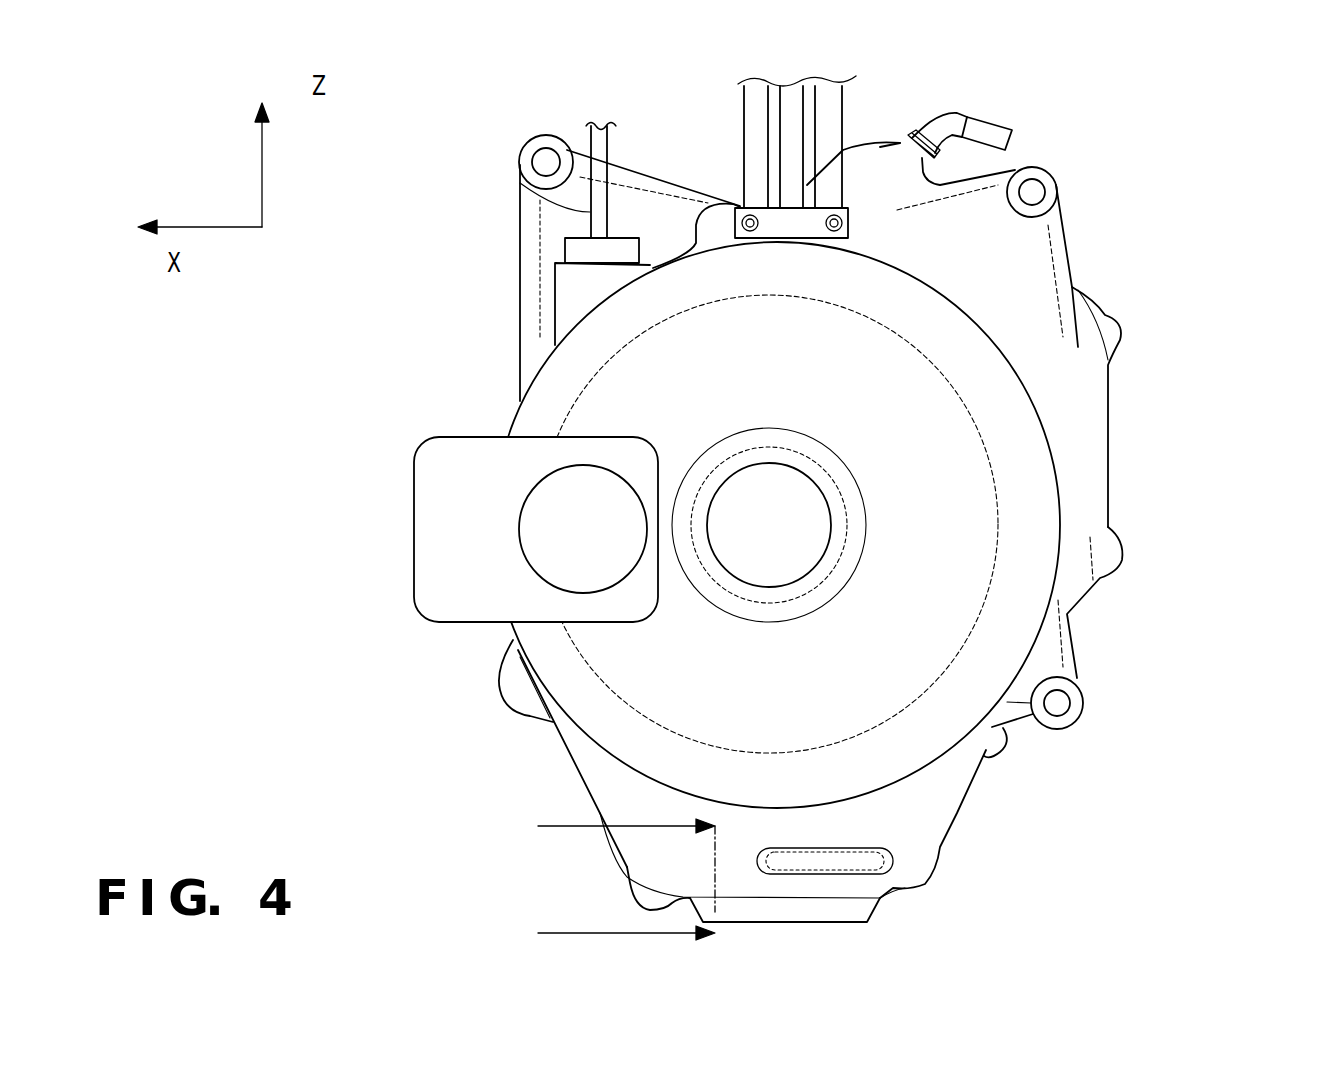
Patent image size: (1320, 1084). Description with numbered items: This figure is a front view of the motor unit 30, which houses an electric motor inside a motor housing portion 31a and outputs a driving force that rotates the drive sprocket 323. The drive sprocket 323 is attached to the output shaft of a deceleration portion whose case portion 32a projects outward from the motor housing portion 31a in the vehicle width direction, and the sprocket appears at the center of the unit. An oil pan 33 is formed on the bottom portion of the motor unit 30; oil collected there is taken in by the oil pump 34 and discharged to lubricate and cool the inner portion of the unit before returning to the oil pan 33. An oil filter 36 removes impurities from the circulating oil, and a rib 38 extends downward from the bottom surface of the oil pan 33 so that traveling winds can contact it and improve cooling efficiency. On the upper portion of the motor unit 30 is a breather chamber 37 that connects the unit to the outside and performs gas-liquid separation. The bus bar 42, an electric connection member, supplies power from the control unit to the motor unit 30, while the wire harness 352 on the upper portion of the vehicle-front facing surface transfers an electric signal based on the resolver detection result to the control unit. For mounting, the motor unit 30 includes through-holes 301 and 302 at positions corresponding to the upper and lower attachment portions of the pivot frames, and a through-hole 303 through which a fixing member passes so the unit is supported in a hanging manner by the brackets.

The motor unit 30 is at (1206, 204).
The through-hole 301 is at (1058, 172).
The through-hole 302 is at (1080, 727).
The through-hole 303 is at (524, 148).
The motor housing portion 31a is at (1030, 548).
The case portion 32a is at (945, 490).
The drive sprocket 323 is at (830, 510).
The oil pan 33 is at (910, 805).
The oil pump 34 is at (414, 578).
The oil filter 36 is at (895, 862).
The breather chamber 37 is at (898, 140).
The rib 38 is at (880, 900).
The bus bar 42 is at (742, 145).
The wire harness 352 is at (588, 207).